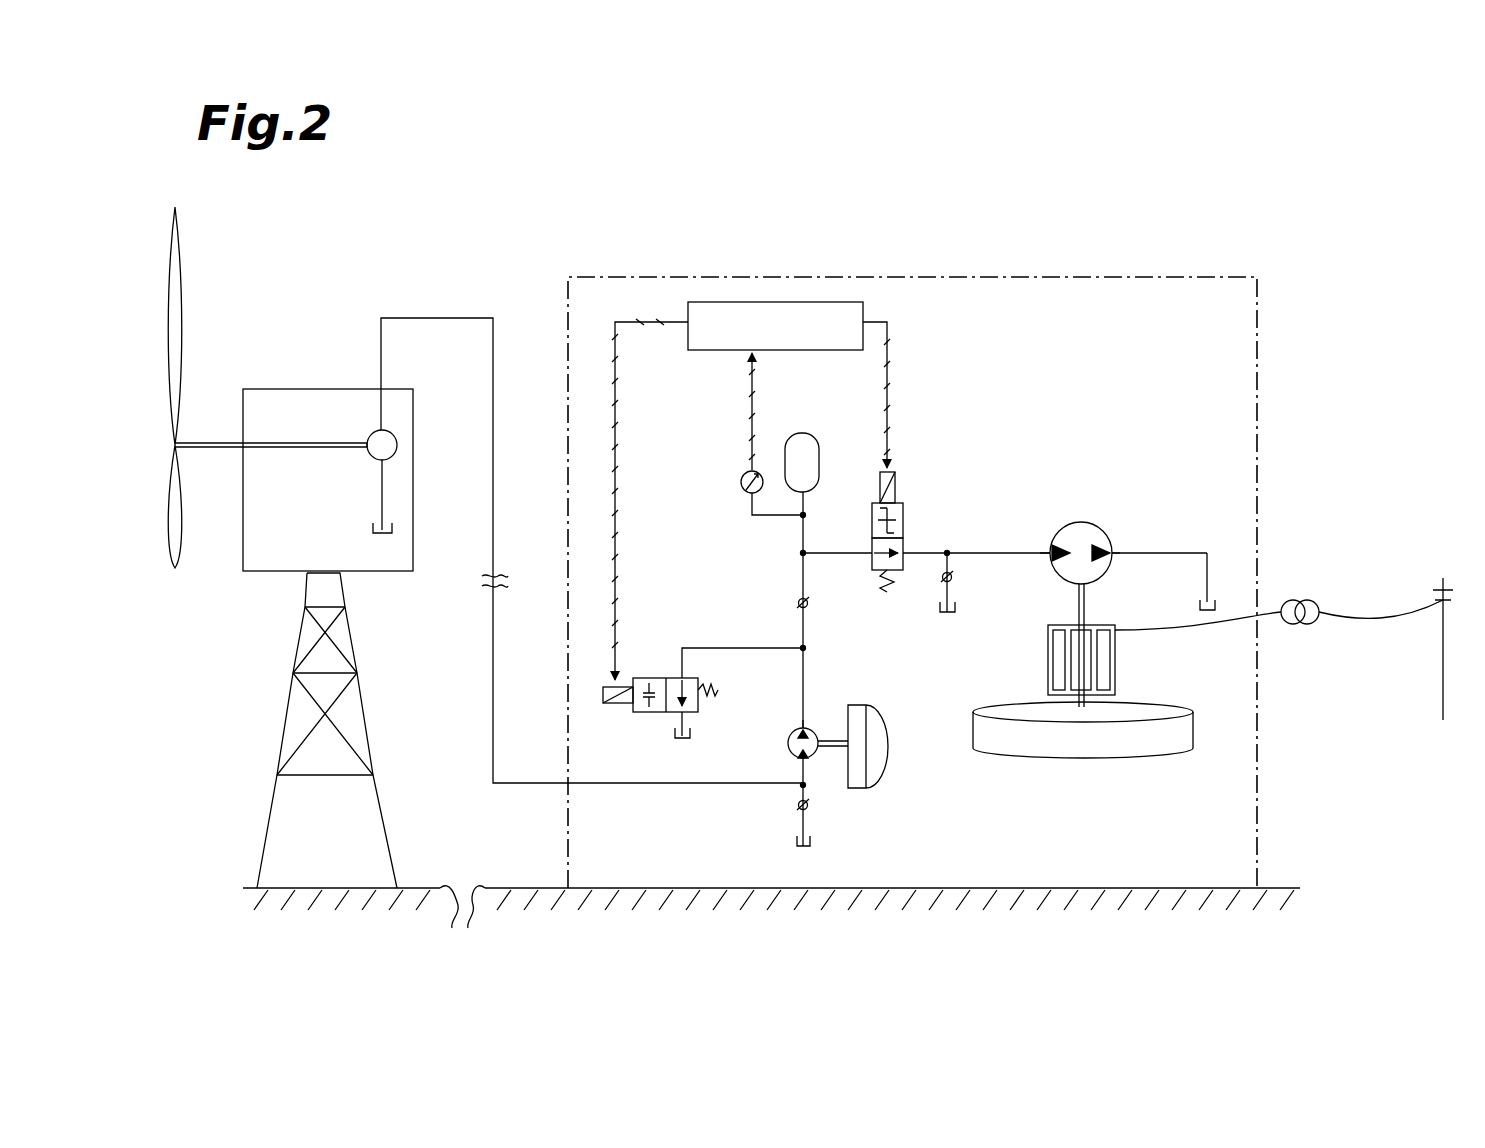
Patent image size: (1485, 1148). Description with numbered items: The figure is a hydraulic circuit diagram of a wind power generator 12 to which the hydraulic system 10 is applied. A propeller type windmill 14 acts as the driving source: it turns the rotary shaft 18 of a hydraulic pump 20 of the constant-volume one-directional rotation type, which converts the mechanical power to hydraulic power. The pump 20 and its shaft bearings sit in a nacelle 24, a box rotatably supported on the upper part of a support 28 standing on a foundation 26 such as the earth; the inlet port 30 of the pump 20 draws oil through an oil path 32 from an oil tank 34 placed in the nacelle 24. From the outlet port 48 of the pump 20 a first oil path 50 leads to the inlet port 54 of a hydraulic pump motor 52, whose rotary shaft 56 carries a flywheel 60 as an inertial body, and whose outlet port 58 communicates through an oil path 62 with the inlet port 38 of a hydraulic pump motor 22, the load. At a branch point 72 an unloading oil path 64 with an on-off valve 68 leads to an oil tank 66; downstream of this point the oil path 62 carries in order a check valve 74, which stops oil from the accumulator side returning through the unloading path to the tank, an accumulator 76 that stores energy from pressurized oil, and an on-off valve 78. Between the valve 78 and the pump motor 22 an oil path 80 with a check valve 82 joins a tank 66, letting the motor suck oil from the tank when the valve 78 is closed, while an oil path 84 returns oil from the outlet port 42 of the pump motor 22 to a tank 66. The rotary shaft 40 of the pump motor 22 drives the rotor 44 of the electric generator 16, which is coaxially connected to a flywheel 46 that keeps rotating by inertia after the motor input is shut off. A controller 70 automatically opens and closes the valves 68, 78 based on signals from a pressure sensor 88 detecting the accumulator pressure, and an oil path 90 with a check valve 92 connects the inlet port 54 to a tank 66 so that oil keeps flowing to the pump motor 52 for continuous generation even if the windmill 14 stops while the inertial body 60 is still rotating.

The hydraulic system 10 is at (359, 730).
The wind power generator 12 is at (1234, 248).
The windmill 14 is at (168, 262).
The electric generator 16 is at (1080, 660).
The rotary shaft 18 is at (345, 443).
The hydraulic pump 20 is at (397, 447).
The hydraulic pump motor 22 is at (1083, 522).
The nacelle 24 is at (243, 570).
The foundation 26 is at (463, 888).
The support 28 is at (300, 620).
The inlet port 30 is at (395, 455).
The oil path 32 is at (386, 490).
The oil tank 34 is at (395, 528).
The inlet port 38 is at (1050, 553).
The rotary shaft 40 is at (1086, 610).
The outlet port 42 is at (1112, 550).
The rotor 44 is at (1115, 660).
The flywheel 46 is at (1190, 715).
The outlet port 48 is at (390, 430).
The oil path 50 is at (458, 318).
The hydraulic pump motor 52 is at (788, 736).
The inlet port 54 is at (790, 752).
The rotary shaft 56 is at (832, 748).
The outlet port 58 is at (807, 727).
The flywheel 60 is at (888, 745).
The oil path 62 is at (832, 553).
The unloading oil path 64 is at (678, 718).
The oil tank 66 is at (677, 742).
The on-off valve 68 is at (640, 678).
The controller 70 is at (865, 308).
The branch point 72 is at (810, 648).
The check valve 74 is at (810, 604).
The accumulator 76 is at (803, 433).
The on-off valve 78 is at (905, 510).
The oil path 80 is at (955, 608).
The check valve 82 is at (955, 578).
The oil path 84 is at (1207, 553).
The pressure sensor 88 is at (748, 493).
The oil path 90 is at (810, 838).
The check valve 92 is at (810, 806).